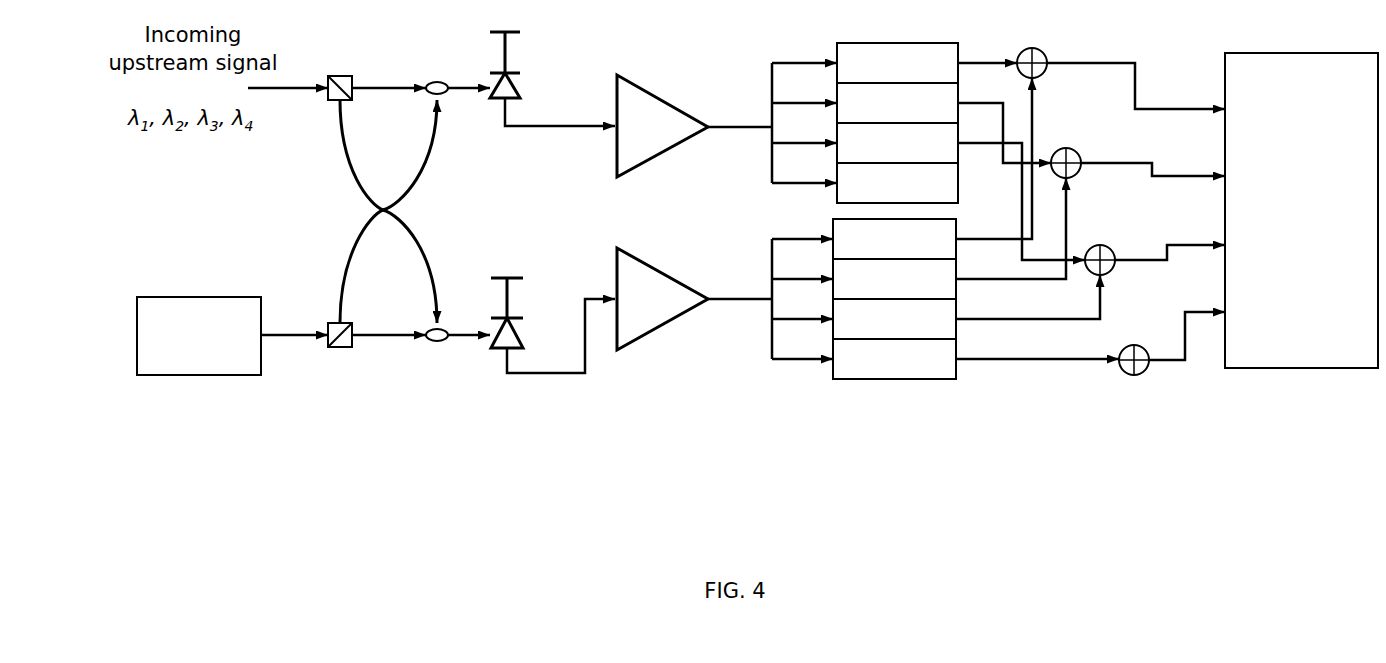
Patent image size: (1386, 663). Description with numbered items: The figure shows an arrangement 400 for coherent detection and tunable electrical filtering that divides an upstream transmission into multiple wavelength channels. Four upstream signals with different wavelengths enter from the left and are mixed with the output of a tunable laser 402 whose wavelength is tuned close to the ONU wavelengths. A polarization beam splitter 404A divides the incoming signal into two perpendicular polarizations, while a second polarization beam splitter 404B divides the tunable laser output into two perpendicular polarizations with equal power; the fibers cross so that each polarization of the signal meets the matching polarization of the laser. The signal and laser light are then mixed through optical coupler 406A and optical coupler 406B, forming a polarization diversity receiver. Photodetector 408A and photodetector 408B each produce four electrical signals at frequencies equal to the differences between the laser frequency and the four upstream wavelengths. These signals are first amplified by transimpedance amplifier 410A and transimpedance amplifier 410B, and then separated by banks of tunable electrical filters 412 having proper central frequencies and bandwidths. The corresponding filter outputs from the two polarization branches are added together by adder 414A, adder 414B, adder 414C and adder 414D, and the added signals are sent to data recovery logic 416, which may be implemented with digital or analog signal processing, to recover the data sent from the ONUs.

The arrangement 400 is at (441, 506).
The tunable laser 402 is at (190, 375).
The polarization beam splitter 404A is at (322, 107).
The polarization beam splitter 404B is at (325, 320).
The optical coupler 406A is at (452, 97).
The optical coupler 406B is at (425, 327).
The photodetector 408A is at (527, 62).
The photodetector 408B is at (525, 305).
The transimpedance amplifier 410A is at (647, 87).
The transimpedance amplifier 410B is at (662, 328).
The tunable electrical filters 412 is at (810, 393).
The adder 414A is at (1048, 77).
The adder 414B is at (1083, 172).
The adder 414C is at (1115, 270).
The adder 414D is at (1145, 375).
The data recovery logic 416 is at (1280, 53).